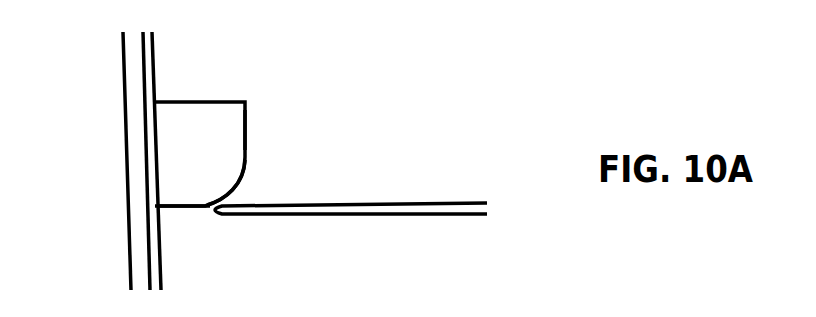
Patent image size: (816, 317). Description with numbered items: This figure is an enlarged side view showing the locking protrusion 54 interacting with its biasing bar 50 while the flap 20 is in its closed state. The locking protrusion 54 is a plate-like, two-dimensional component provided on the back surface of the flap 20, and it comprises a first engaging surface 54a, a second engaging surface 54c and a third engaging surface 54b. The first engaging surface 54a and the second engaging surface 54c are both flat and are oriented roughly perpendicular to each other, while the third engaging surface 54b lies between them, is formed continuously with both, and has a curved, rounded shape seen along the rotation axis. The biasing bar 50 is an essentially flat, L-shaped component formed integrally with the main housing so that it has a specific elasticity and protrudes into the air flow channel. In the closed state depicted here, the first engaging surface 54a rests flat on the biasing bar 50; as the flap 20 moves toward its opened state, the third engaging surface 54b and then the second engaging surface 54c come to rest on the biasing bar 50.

The flap 20 is at (131, 113).
The locking protrusion 54 is at (190, 113).
The first engaging surface 54a is at (180, 208).
The third engaging surface 54b is at (240, 180).
The second engaging surface 54c is at (245, 128).
The biasing bar 50 is at (352, 211).